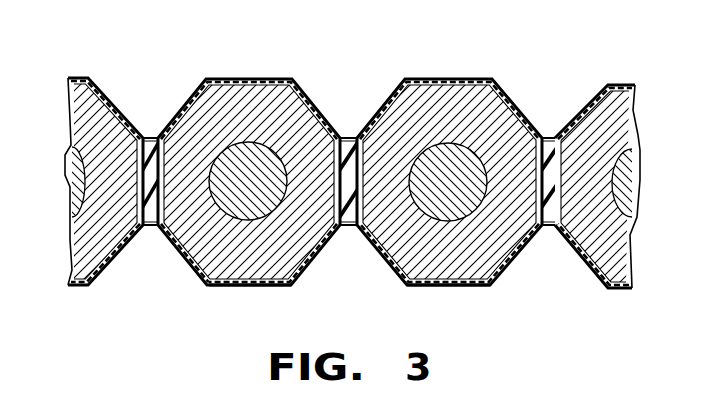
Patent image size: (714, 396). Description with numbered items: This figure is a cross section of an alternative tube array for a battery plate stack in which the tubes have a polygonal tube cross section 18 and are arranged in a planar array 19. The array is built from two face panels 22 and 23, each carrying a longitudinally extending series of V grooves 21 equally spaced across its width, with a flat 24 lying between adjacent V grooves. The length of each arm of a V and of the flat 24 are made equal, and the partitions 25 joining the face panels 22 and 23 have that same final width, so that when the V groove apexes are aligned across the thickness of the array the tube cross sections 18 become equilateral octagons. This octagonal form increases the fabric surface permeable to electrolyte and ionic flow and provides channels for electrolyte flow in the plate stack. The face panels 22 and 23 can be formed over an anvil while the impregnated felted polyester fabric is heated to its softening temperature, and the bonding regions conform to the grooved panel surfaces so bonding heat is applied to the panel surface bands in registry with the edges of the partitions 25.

The polygonal tube cross section 18 is at (244, 74).
The planar array 19 is at (495, 326).
The V grooves 21 is at (547, 140).
The face panel 22 is at (283, 80).
The face panel 23 is at (215, 288).
The flat 24 is at (440, 288).
The partitions 25 is at (150, 137).